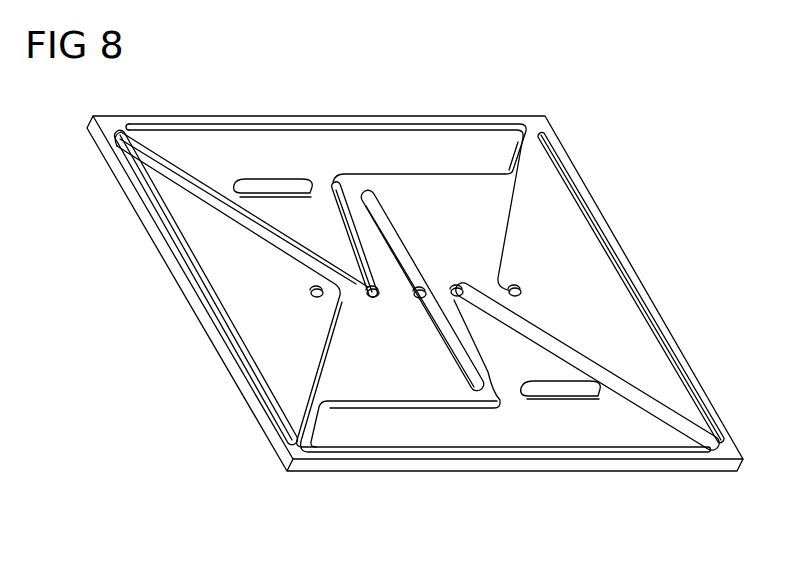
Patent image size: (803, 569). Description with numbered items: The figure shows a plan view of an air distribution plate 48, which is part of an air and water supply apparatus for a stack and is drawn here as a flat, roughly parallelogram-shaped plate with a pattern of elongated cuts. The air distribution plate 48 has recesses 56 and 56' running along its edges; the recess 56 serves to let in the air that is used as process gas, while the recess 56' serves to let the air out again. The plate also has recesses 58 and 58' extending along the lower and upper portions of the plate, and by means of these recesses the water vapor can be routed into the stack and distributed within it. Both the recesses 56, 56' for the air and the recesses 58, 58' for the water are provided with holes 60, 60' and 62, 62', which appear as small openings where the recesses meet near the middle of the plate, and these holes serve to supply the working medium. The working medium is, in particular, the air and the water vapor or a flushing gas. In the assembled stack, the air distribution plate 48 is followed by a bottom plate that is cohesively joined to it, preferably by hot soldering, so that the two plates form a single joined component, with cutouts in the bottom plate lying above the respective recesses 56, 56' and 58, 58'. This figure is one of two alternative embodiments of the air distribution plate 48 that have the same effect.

The air distribution plate 48 is at (537, 116).
The recess 56 is at (408, 287).
The recess 56' is at (408, 222).
The recess 58 is at (417, 359).
The recess 58' is at (326, 172).
The hole 60 is at (410, 289).
The hole 60' is at (441, 176).
The hole 62 is at (584, 252).
The hole 62' is at (412, 253).